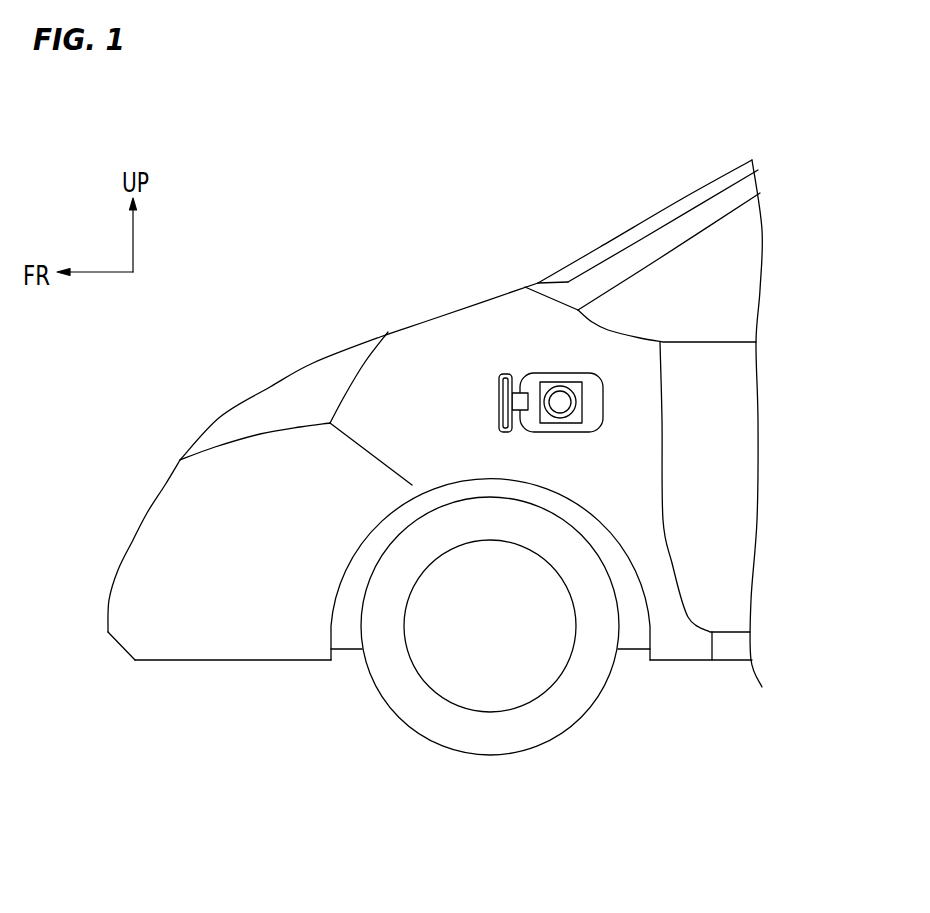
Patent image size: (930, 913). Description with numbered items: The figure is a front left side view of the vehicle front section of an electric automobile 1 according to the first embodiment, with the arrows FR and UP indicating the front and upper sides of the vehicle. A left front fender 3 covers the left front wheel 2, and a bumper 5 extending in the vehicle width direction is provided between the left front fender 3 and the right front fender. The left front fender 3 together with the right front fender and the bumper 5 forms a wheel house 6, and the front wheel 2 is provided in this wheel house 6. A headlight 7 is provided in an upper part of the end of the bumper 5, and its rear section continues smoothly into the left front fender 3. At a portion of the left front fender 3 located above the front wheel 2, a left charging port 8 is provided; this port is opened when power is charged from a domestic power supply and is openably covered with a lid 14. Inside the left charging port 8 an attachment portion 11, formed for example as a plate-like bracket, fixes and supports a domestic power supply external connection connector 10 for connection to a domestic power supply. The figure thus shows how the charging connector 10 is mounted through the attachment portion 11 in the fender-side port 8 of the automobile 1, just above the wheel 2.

The electric automobile 1 is at (312, 139).
The front wheel 2 is at (542, 735).
The left front fender 3 is at (432, 322).
The bumper 5 is at (147, 517).
The wheel house 6 is at (478, 468).
The headlight 7 is at (273, 395).
The left charging port 8 is at (597, 372).
The domestic power supply external connection connector 10 is at (558, 383).
The attachment portion 11 is at (583, 413).
The lid 14 is at (505, 377).